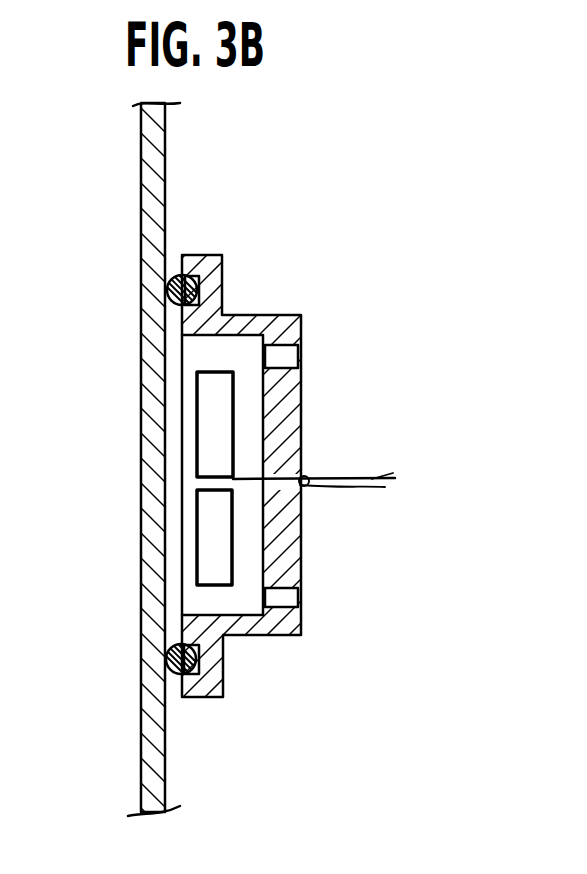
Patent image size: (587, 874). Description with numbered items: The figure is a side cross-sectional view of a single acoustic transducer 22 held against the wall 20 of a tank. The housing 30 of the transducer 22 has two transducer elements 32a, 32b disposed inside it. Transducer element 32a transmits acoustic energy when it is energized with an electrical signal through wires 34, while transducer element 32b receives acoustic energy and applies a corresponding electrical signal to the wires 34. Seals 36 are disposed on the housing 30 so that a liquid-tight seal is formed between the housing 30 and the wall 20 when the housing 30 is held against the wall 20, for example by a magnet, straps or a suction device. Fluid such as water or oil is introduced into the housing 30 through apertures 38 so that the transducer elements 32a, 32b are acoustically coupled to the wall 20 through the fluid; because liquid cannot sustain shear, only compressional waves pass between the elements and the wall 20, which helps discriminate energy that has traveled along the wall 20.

The wall 20 is at (168, 181).
The transducer 22 is at (295, 442).
The housing 30 is at (301, 320).
The transducer element 32a is at (240, 545).
The transducer element 32b is at (232, 422).
The wires 34 is at (380, 472).
The seals 36 is at (170, 292).
The apertures 38 is at (290, 594).